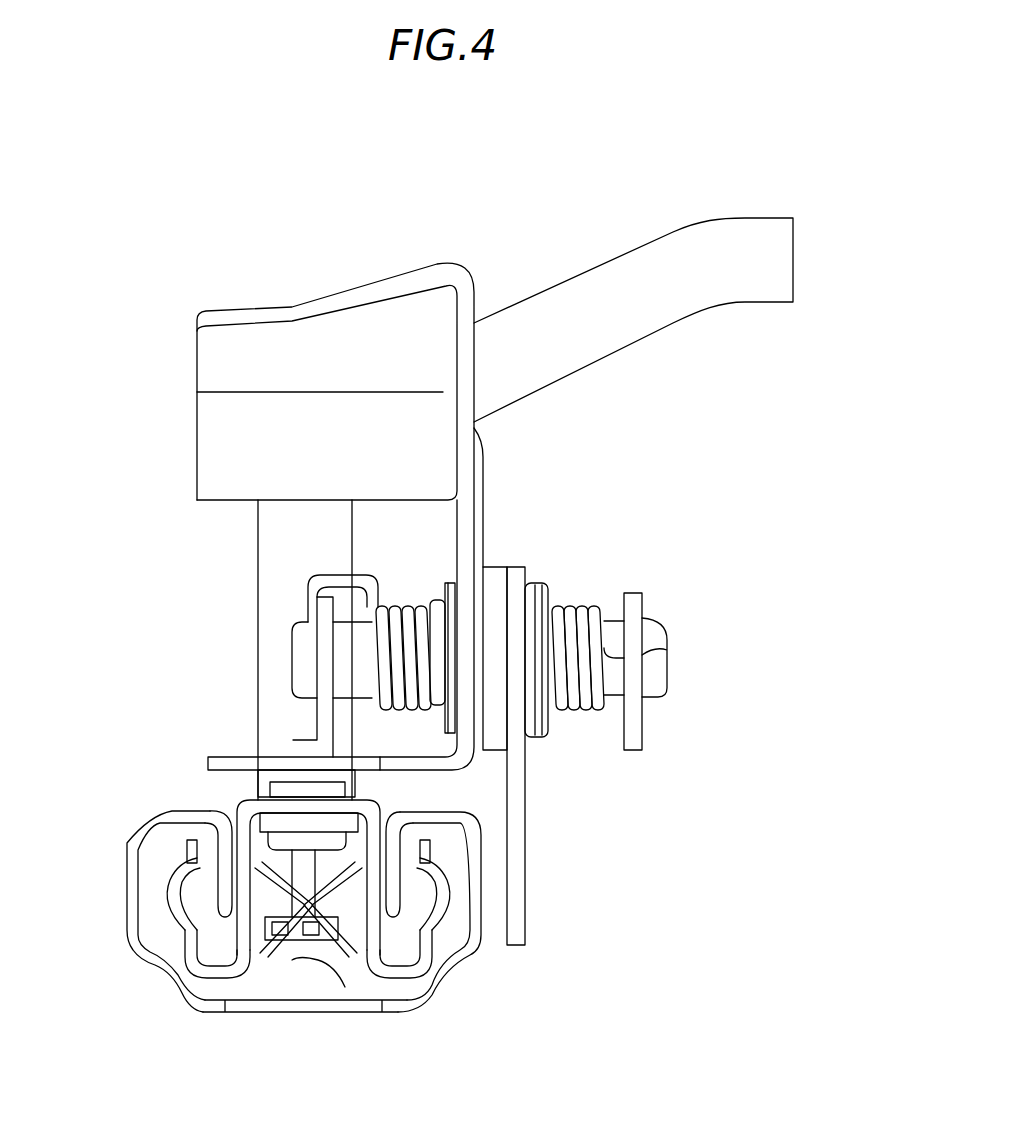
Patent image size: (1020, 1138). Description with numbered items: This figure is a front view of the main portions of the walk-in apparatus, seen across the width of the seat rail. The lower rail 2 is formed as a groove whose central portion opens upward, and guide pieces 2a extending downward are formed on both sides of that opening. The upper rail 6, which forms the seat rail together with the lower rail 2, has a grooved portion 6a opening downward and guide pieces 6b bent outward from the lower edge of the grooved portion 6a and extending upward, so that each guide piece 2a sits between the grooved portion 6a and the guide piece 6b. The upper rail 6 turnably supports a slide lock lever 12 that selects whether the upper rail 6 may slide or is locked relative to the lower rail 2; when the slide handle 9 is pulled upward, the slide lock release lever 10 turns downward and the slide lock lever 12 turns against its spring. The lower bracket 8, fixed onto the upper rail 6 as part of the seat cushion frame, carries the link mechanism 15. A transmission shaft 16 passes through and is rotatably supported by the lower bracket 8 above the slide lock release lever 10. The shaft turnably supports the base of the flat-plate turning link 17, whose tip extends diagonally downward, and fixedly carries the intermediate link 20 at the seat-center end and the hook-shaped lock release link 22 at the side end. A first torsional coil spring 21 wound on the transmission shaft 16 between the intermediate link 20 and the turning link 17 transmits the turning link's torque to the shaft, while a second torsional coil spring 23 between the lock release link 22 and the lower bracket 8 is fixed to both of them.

The lower rail 2 is at (322, 943).
The guide piece 2a is at (217, 867).
The upper rail 6 is at (322, 889).
The grooved portion 6a is at (197, 937).
The guide piece 6b is at (163, 898).
The lower bracket 8 is at (426, 263).
The slide handle 9 is at (752, 218).
The slide lock release lever 10 is at (345, 988).
The slide lock lever 12 is at (290, 960).
The link mechanism 15 is at (652, 544).
The transmission shaft 16 is at (667, 668).
The turning link 17 is at (525, 795).
The intermediate link 20 is at (642, 733).
The first torsional coil spring 21 is at (580, 607).
The lock release link 22 is at (302, 750).
The second torsional coil spring 23 is at (404, 607).